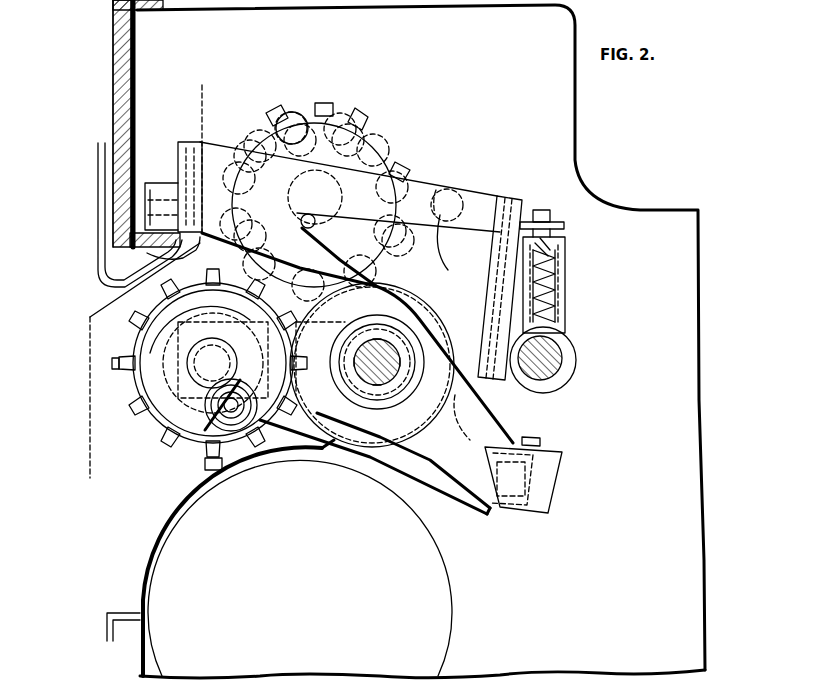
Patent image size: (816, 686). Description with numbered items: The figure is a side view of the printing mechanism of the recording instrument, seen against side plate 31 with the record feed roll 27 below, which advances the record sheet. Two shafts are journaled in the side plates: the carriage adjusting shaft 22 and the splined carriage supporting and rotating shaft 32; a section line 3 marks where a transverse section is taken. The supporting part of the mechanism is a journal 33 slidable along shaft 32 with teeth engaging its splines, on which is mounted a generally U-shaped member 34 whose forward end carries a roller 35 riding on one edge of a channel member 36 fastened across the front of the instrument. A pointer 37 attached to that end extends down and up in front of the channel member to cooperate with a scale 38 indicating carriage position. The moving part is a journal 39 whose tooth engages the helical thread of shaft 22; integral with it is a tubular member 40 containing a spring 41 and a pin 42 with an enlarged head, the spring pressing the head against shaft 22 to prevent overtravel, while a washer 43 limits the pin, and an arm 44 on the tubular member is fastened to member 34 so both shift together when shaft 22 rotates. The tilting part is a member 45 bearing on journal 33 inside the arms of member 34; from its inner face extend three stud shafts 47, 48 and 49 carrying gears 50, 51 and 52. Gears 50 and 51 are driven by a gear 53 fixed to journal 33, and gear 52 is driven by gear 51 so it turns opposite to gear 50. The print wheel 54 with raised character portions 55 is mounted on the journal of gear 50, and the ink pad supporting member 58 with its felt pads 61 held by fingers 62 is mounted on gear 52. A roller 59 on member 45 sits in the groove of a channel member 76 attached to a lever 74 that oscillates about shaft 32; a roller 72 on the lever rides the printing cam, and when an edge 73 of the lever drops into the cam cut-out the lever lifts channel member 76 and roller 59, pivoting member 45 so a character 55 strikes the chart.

The section line 3- 3 is at (200, 92).
The carriage adjusting shaft 22 is at (560, 350).
The record feed roll 27 is at (445, 605).
The side plate 31 is at (570, 120).
The carriage supporting and rotating shaft 32 is at (395, 378).
The journal 33 is at (400, 430).
The U-shaped member 34 is at (503, 202).
The roller 35 is at (158, 184).
The channel member 36 is at (125, 30).
The pointer 37 is at (100, 240).
The scale 38 is at (118, 96).
The journal 39 is at (563, 375).
The tubular member 40 is at (566, 272).
The spring 41 is at (565, 243).
The pin 42 is at (543, 211).
The washer 43 is at (562, 225).
The arm 44 is at (490, 215).
The tilting member 45 is at (456, 490).
The stud shaft 47 is at (168, 418).
The stud shaft 48 is at (447, 190).
The stud shaft 49 is at (380, 136).
The gear 50 is at (172, 448).
The gear 51 is at (420, 195).
The gear 52 is at (352, 112).
The gear 53 is at (320, 449).
The print wheel 54 is at (128, 392).
The raised portions 55 is at (112, 363).
The ink pad supporting member 58 is at (300, 122).
The roller 59 is at (500, 503).
The felt 61 is at (290, 118).
The fingers 62 is at (270, 108).
The roller 72 is at (232, 412).
The edge 73 is at (204, 452).
The lever 74 is at (484, 412).
The channel member 76 is at (540, 442).